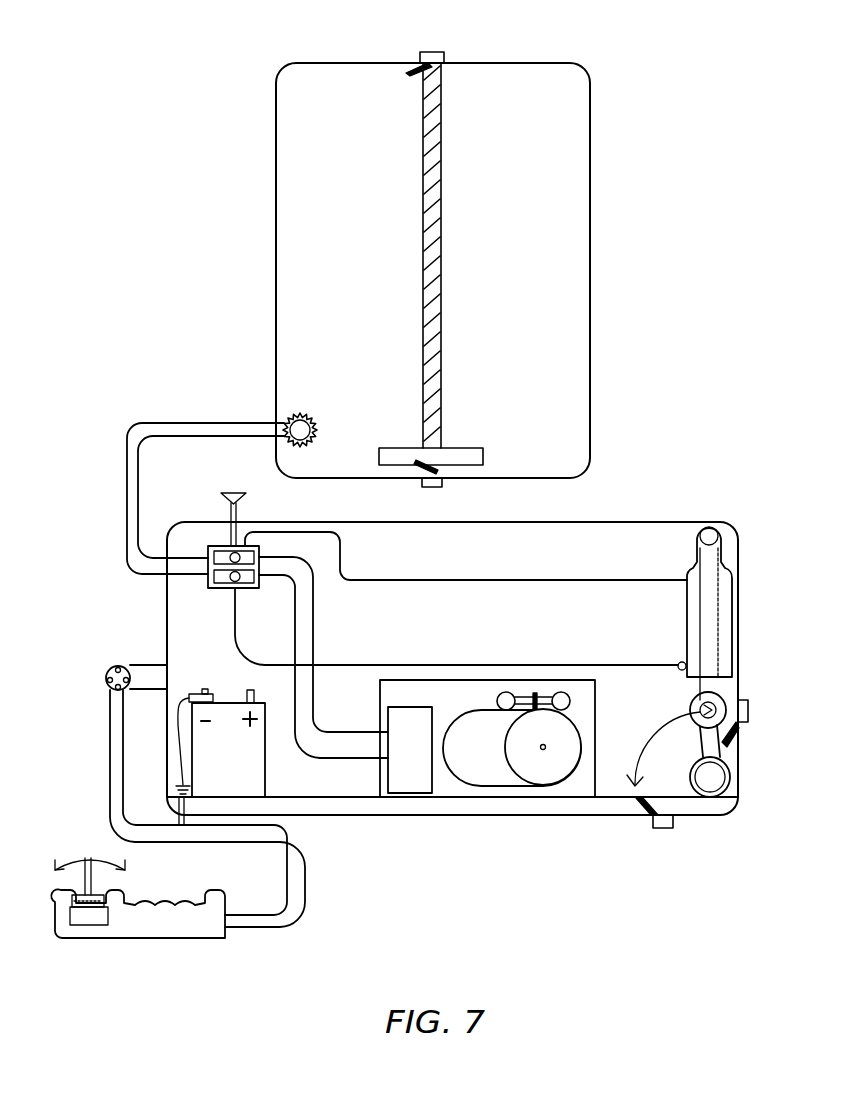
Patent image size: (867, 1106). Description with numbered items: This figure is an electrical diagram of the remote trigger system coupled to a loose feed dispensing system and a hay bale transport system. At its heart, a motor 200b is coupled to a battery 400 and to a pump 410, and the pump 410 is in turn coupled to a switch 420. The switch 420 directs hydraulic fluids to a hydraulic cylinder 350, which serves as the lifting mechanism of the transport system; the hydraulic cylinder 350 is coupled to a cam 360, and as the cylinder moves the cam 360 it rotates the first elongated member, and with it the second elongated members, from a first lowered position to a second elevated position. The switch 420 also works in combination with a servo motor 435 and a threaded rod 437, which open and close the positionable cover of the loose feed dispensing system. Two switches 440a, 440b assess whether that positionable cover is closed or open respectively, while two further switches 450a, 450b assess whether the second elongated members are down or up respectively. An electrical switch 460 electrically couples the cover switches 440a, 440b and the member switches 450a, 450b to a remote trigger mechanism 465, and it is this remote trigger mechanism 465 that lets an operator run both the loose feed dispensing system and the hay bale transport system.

The threaded rod 437 is at (445, 251).
The switch 440b is at (430, 51).
The switch 440a is at (438, 488).
The servo motor 435 is at (467, 447).
The switch 420 is at (223, 590).
The hydraulic cylinder 350 is at (712, 613).
The cam 360 is at (721, 745).
The switch 450a is at (750, 709).
The switch 450b is at (667, 829).
The motor 200b is at (500, 788).
The pump 410 is at (419, 793).
The battery 400 is at (227, 701).
The electrical switch 460 is at (110, 668).
The remote trigger mechanism 465 is at (53, 895).